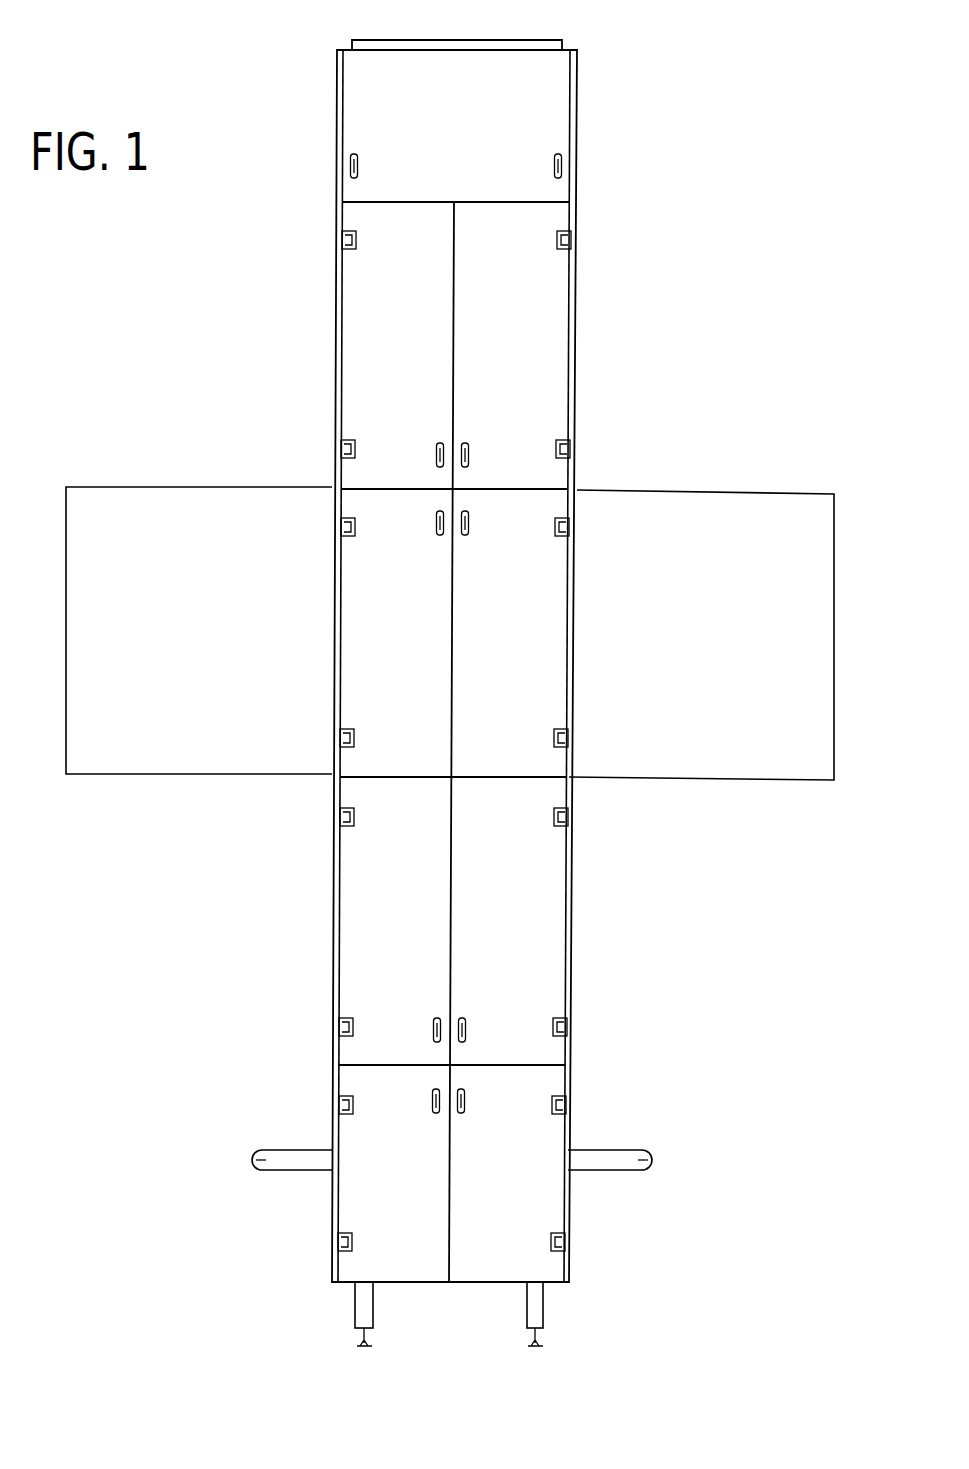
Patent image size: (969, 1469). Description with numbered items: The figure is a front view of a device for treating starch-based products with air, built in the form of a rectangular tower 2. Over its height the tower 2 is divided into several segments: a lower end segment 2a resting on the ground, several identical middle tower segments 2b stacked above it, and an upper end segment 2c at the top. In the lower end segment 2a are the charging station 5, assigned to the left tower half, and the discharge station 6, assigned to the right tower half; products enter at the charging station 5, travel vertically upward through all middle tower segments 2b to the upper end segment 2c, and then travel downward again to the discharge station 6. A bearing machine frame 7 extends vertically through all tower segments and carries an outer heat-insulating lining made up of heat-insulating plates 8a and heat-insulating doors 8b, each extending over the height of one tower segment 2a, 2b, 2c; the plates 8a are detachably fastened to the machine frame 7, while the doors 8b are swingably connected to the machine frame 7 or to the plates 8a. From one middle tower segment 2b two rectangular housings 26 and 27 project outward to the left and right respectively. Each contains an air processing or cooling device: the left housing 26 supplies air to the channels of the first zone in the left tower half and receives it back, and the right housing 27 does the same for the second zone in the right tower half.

The tower 2 is at (575, 33).
The lower end segment 2a is at (573, 1225).
The middle tower segments 2b is at (580, 285).
The upper end segment 2c is at (579, 107).
The charging station 5 is at (316, 1141).
The discharge station 6 is at (584, 1142).
The bearing machine frame 7 is at (537, 1312).
The heat-insulating plates 8a is at (345, 124).
The heat-insulating doors 8b is at (348, 303).
The left housing 26 is at (108, 490).
The right housing 27 is at (798, 494).